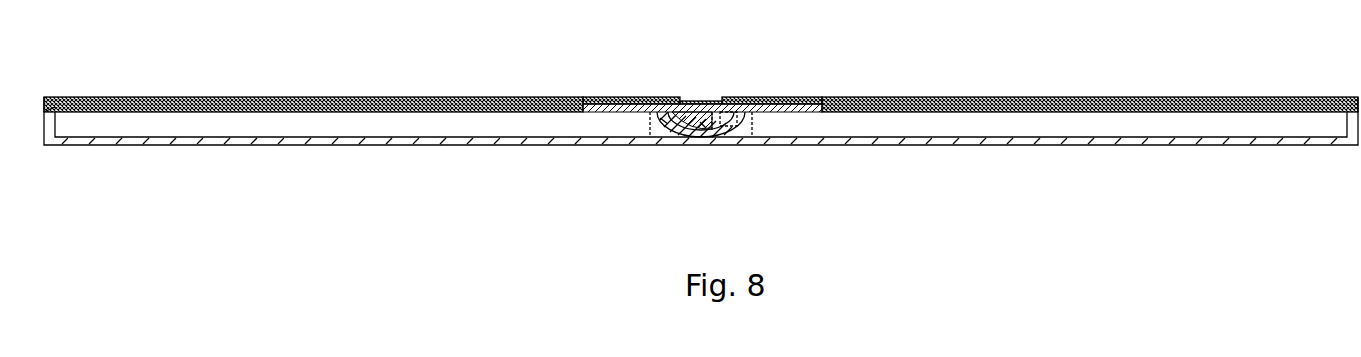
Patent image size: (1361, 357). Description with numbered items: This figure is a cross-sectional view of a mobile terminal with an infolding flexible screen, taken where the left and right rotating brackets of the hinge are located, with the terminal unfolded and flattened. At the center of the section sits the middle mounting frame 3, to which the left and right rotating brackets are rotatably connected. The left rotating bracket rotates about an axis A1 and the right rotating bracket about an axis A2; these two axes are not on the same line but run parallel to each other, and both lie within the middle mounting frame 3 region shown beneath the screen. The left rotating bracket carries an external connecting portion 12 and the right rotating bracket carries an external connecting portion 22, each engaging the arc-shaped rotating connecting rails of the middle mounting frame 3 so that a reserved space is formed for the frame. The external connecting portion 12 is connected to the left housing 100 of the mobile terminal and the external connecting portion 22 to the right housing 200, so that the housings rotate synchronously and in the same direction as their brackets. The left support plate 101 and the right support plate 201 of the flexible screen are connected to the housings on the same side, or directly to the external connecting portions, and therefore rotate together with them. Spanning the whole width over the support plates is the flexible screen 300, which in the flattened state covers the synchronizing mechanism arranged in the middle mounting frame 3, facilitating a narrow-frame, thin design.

The left housing 100 is at (232, 145).
The left support plate 101 is at (343, 97).
The external connecting portion 12 is at (615, 98).
The right housing 200 is at (1150, 144).
The right support plate 201 is at (1032, 98).
The flexible screen 300 is at (808, 100).
The middle mounting frame 3 is at (700, 128).
The external connecting portion 22 is at (772, 110).
The axis of the rotation connection of the left rotating bracket A1 is at (667, 118).
The axis of the rotation connection of the right rotating bracket A2 is at (703, 125).